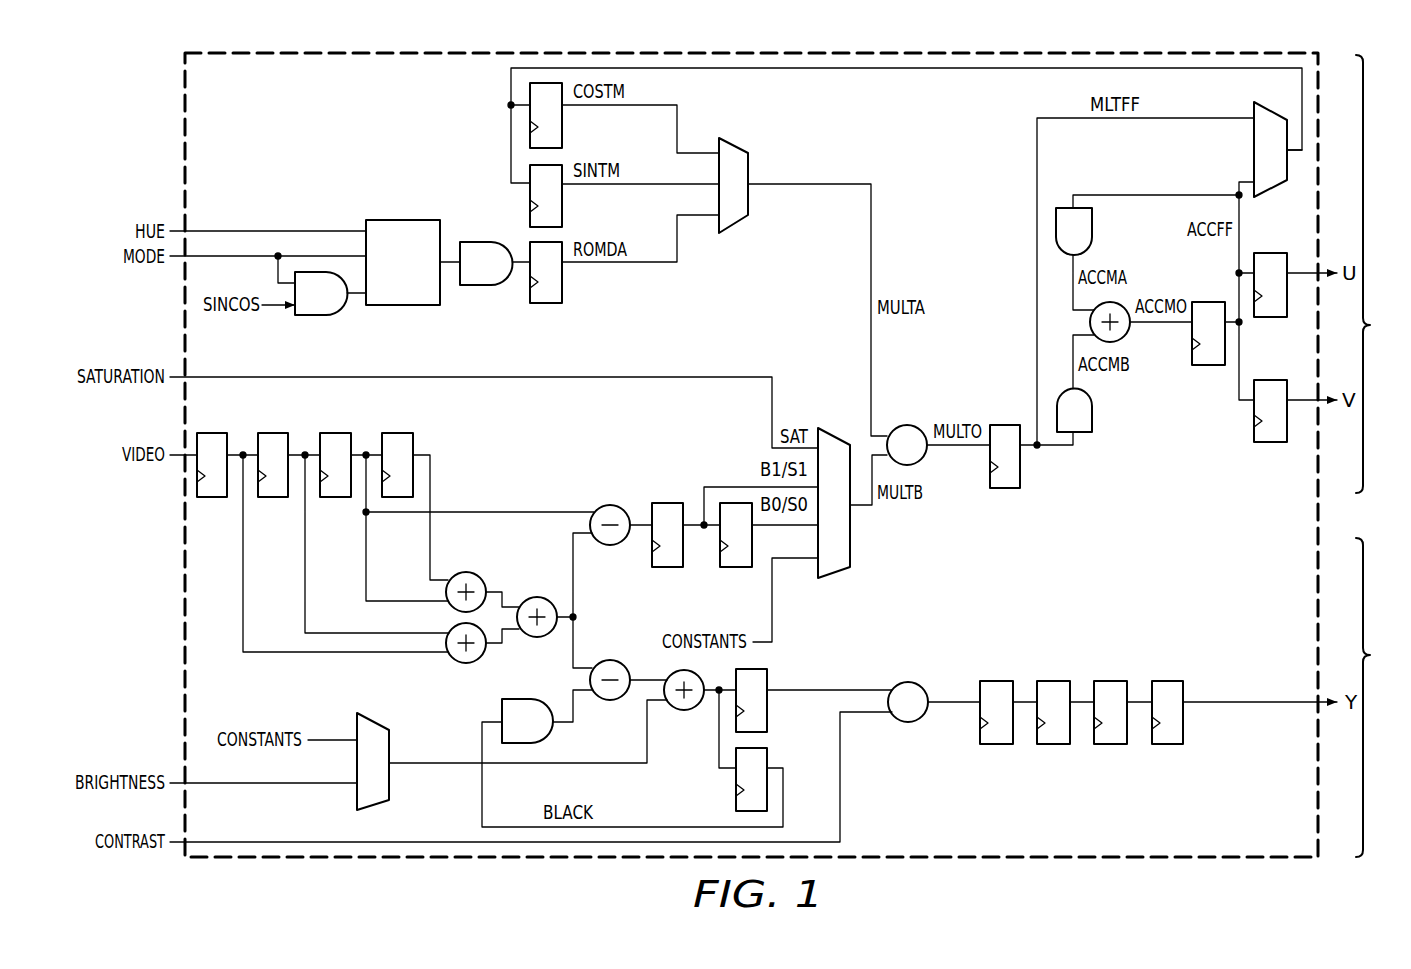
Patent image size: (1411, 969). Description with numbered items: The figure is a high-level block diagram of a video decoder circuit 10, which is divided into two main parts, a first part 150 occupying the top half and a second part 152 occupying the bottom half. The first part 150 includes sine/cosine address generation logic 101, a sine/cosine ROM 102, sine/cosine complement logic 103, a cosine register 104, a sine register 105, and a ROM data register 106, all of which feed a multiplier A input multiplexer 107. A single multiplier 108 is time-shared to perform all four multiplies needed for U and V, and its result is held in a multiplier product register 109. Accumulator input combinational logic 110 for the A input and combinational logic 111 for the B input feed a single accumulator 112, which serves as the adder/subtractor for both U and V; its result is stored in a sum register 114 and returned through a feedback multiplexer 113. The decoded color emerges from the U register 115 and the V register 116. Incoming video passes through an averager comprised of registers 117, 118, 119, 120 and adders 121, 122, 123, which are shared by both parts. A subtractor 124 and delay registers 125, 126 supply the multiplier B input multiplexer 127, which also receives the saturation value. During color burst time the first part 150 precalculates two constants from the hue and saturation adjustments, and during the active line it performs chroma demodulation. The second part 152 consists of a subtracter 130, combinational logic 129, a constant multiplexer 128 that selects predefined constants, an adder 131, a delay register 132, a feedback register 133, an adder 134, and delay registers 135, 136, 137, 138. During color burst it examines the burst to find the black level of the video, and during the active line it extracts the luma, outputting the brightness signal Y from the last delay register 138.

The circuit 10 is at (259, 121).
The sine/cosine address generation logic 101 is at (318, 315).
The sine/cosine ROM 102 is at (405, 220).
The sine/cosine complement logic 103 is at (485, 285).
The cosine register 104 is at (562, 118).
The sine register 105 is at (562, 198).
The ROM data register 106 is at (562, 276).
The multiplier A input multiplexer 107 is at (750, 168).
The multiplier 108 is at (907, 425).
The multiplier product register 109 is at (1005, 488).
The accumulator A input combinational logic 110 is at (1092, 232).
The accumulator B input combinational logic 111 is at (1092, 413).
The accumulator 112 is at (1125, 338).
The feedback multiplexer 113 is at (1254, 150).
The sum register 114 is at (1208, 365).
The U register 115 is at (1272, 317).
The V register 116 is at (1272, 442).
The register 117 is at (212, 433).
The register 118 is at (273, 433).
The register 119 is at (335, 433).
The register 120 is at (397, 433).
The adder 121 is at (466, 572).
The adder 122 is at (466, 663).
The adder 123 is at (537, 597).
The subtractor 124 is at (608, 505).
The delay register 125 is at (665, 567).
The delay register 126 is at (733, 567).
The multiplier B input multiplexer 127 is at (850, 548).
The constant multiplexer 128 is at (389, 780).
The combinational logic 129 is at (530, 699).
The subtracter 130 is at (605, 700).
The adder 131 is at (684, 710).
The delay register 132 is at (767, 676).
The feedback register 133 is at (736, 780).
The adder 134 is at (910, 722).
The delay register 135 is at (995, 744).
The delay register 136 is at (1052, 744).
The delay register 137 is at (1109, 744).
The delay register 138 is at (1166, 744).
The first part 150 is at (1383, 274).
The second part 152 is at (1383, 697).